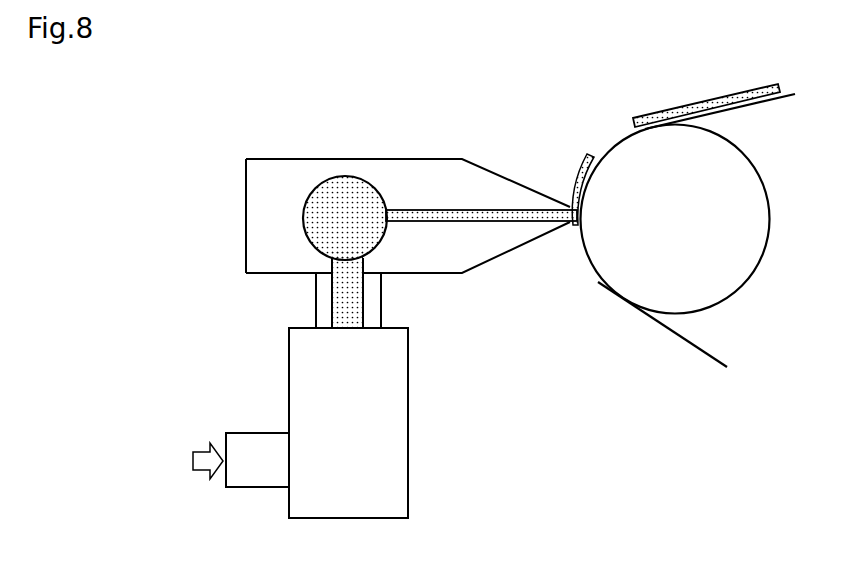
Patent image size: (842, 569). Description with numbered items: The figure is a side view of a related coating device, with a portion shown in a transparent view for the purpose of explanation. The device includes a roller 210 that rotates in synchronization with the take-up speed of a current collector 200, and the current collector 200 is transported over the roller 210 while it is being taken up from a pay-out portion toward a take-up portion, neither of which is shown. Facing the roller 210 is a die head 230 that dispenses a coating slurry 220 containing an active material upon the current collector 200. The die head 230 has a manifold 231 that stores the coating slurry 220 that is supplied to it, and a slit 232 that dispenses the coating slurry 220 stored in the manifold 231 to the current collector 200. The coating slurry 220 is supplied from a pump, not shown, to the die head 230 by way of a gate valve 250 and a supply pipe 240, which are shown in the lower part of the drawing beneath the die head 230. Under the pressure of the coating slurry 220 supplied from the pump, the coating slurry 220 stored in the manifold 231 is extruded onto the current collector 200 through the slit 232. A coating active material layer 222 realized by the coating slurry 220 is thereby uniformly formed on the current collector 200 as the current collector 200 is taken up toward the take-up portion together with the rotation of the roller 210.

The current collector 200 is at (677, 335).
The roller 210 is at (707, 302).
The coating slurry 220 is at (346, 289).
The coating active material layer 222 is at (670, 109).
The die head 230 is at (398, 159).
The manifold 231 is at (345, 176).
The slit 232 is at (519, 210).
The supply pipe 240 is at (382, 310).
The gate valve 250 is at (410, 423).